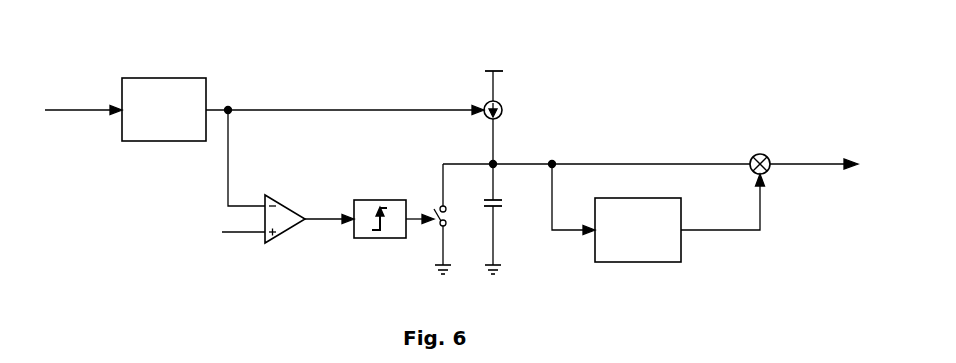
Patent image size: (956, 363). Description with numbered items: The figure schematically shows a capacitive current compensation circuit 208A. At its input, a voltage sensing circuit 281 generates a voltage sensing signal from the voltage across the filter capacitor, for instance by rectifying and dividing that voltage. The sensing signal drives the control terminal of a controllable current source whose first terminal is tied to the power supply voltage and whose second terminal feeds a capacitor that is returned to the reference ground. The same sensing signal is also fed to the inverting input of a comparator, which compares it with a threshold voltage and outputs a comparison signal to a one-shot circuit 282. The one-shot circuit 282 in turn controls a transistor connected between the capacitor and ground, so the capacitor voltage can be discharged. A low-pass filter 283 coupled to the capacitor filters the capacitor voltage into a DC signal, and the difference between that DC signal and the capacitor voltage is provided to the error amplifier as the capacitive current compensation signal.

The capacitive current compensation circuit 208A is at (755, 66).
The voltage sensing circuit 281 is at (131, 141).
The one-shot circuit 282 is at (360, 239).
The low-pass filter 283 is at (606, 262).